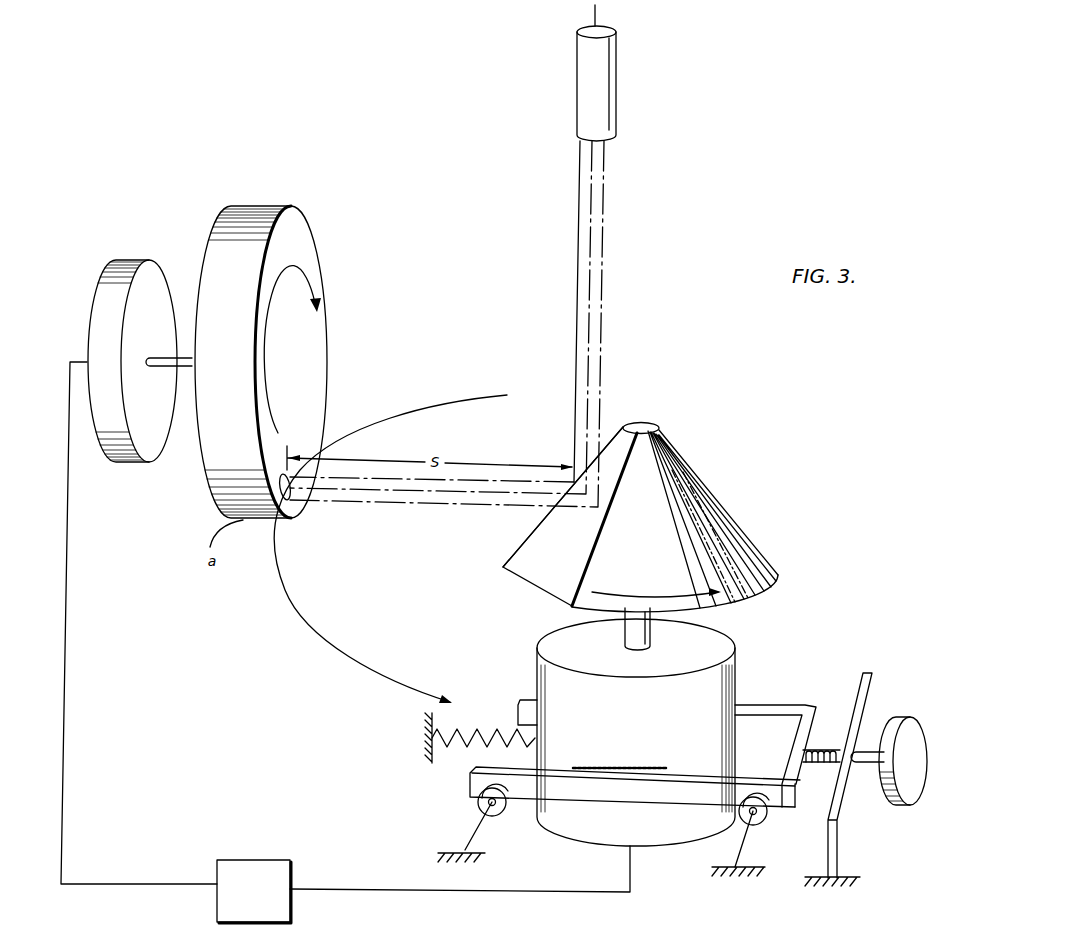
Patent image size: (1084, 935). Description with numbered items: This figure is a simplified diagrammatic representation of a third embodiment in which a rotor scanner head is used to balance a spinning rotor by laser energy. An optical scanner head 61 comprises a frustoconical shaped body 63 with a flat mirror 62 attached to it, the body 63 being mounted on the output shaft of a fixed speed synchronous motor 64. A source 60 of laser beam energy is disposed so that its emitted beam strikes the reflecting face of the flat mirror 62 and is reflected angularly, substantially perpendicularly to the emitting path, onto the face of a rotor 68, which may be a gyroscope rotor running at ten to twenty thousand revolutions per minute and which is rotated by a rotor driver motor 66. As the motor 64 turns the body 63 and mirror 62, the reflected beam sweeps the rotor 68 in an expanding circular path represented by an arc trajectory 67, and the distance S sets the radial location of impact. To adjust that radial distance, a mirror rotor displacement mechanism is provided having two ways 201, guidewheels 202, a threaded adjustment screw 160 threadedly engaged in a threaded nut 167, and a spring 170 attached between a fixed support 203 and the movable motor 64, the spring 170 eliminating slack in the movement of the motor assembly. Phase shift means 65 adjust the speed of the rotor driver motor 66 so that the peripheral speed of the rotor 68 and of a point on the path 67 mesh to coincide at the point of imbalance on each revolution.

The source of laser beam energy 60 is at (595, 110).
The optical scanner head 61 is at (625, 517).
The flat mirror 62 is at (538, 537).
The frustoconical shaped body 63 is at (707, 523).
The fixed speed motor 64 is at (733, 655).
The phase shift means 65 is at (280, 862).
The rotor driver motor 66 is at (127, 270).
The path of the beam 67 is at (337, 643).
The rotor 68 is at (300, 248).
The threaded adjustment screw 160 is at (912, 725).
The threaded nut 167 is at (813, 706).
The spring 170 is at (470, 733).
The ways 201 is at (735, 770).
The guidewheels 202 is at (505, 798).
The fixed support 203 is at (428, 745).